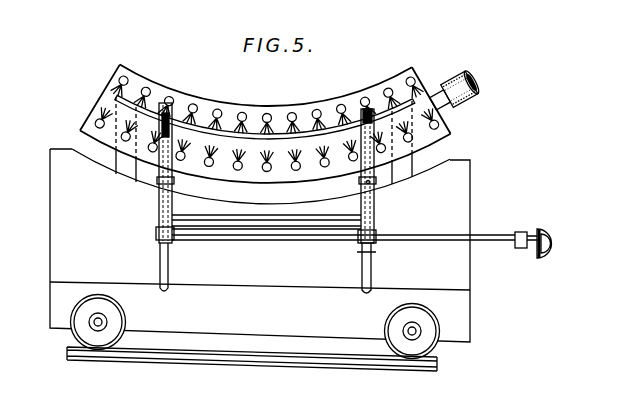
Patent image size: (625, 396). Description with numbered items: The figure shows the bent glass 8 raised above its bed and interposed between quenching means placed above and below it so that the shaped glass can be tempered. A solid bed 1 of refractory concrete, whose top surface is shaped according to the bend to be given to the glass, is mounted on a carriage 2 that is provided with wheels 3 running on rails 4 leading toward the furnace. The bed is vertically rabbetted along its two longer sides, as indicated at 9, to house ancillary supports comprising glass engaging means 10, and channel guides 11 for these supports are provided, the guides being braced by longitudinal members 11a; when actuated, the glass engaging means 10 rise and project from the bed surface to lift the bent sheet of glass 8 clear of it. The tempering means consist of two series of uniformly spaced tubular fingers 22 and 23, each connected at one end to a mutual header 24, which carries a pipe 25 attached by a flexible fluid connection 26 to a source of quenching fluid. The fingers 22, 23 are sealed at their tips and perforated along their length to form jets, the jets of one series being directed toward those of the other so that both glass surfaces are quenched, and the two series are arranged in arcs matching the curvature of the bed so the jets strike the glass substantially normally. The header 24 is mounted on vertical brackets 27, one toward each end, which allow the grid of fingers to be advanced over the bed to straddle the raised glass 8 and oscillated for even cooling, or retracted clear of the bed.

The solid bed 1 is at (447, 215).
The carriage 2 is at (240, 287).
The wheels 3 is at (119, 320).
The rails 4 is at (270, 362).
The glass 8 is at (256, 147).
The vertical rabbets 9 is at (156, 234).
The glass engaging means 10 is at (170, 114).
The channel guides 11 is at (158, 206).
The longitudinal members 11a is at (272, 216).
The tubular fingers 22 is at (168, 96).
The tubular fingers 23 is at (266, 171).
The header 24 is at (279, 113).
The pipe 25 is at (445, 93).
The flexible fluid connection 26 is at (468, 101).
The vertical brackets 27 is at (127, 160).